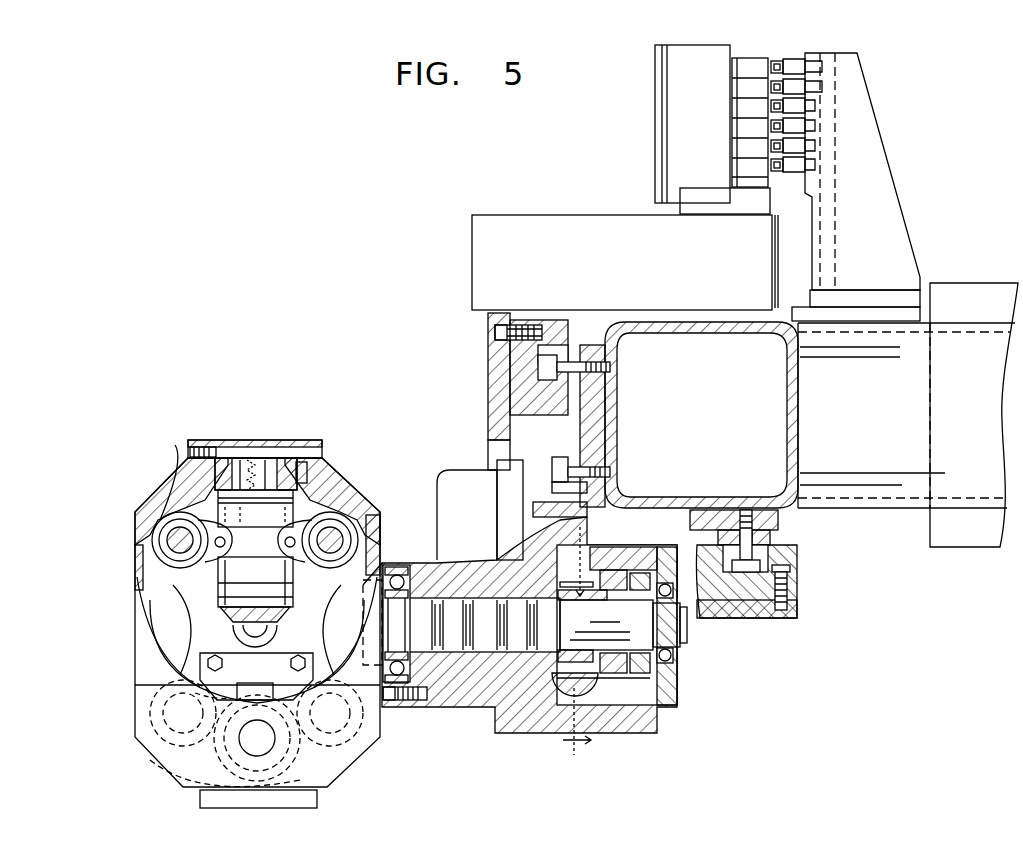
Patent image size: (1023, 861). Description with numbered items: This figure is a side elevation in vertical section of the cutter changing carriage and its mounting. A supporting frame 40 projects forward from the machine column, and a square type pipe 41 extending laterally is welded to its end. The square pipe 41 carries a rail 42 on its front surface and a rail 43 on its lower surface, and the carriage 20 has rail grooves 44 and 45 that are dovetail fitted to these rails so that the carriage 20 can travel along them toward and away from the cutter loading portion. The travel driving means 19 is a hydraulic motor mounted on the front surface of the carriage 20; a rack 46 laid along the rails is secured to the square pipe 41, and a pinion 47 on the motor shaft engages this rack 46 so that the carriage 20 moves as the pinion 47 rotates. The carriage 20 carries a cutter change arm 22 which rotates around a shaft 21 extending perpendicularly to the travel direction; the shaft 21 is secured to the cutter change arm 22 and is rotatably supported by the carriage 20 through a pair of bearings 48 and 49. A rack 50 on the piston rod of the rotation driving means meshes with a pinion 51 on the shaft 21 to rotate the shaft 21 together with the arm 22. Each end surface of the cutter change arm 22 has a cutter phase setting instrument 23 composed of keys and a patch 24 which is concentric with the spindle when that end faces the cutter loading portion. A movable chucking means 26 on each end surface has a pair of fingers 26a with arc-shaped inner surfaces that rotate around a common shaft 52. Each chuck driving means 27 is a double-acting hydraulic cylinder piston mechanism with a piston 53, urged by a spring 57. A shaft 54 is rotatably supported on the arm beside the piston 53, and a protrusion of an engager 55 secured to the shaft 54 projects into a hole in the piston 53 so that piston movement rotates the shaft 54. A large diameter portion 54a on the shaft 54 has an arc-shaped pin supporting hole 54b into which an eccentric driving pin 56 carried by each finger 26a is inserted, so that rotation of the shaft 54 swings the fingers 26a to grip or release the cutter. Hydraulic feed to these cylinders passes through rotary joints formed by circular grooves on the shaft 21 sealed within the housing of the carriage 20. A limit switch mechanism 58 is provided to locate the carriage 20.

The travel driving means 19 is at (473, 488).
The carriage 20 is at (510, 277).
The shaft 21 is at (515, 655).
The cutter change arm 22 is at (365, 772).
The cutter phase setting instrument 23 is at (210, 680).
The patch 24 is at (243, 632).
The movable chucking means 26 is at (376, 570).
The fingers 26a is at (445, 562).
The chuck driving means 27 is at (303, 490).
The supporting frame 40 is at (977, 457).
The square type pipe 41 is at (705, 324).
The rail 42 is at (560, 350).
The rail 43 is at (798, 558).
The rail groove 44 is at (516, 386).
The rail groove 45 is at (740, 618).
The rack 46 is at (613, 447).
The pinion 47 is at (600, 505).
The bearing 48 is at (440, 655).
The bearing 49 is at (672, 672).
The rack 50 is at (588, 693).
The pinion 51 is at (583, 518).
The common shaft 52 is at (267, 743).
The piston 53 is at (215, 472).
The shaft 54 is at (172, 533).
The large diameter portion 54a is at (292, 665).
The pin supporting hole 54b is at (175, 758).
The engager 55 is at (255, 548).
The eccentric driving pin 56 is at (165, 485).
The spring 57 is at (268, 438).
The limit switch mechanism 58 is at (790, 55).